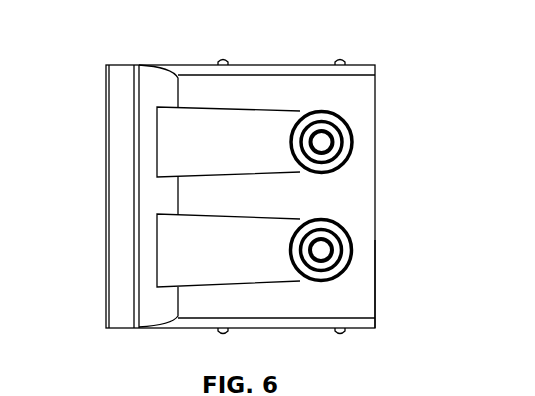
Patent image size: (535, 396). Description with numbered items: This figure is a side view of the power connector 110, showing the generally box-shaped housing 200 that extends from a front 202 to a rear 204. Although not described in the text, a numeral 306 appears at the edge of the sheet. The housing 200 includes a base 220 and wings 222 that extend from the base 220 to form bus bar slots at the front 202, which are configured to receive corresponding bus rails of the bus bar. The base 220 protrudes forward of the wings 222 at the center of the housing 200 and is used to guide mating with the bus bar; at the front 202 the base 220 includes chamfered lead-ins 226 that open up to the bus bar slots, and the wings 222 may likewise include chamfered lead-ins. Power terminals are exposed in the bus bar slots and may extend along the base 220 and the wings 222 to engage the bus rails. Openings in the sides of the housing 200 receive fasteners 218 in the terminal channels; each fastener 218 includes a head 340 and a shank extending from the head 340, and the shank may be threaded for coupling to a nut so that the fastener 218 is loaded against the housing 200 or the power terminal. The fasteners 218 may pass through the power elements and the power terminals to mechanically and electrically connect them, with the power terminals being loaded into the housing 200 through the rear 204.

The power connector 110 is at (406, 50).
The housing 200 is at (348, 188).
The front 202 is at (106, 273).
The rear 204 is at (375, 278).
The fastener 218 is at (333, 136).
The base 220 is at (116, 159).
The wing 222 is at (158, 193).
The chamfered lead-in 226 is at (116, 178).
The head 340 is at (332, 238).
The connector 306 is at (504, 391).